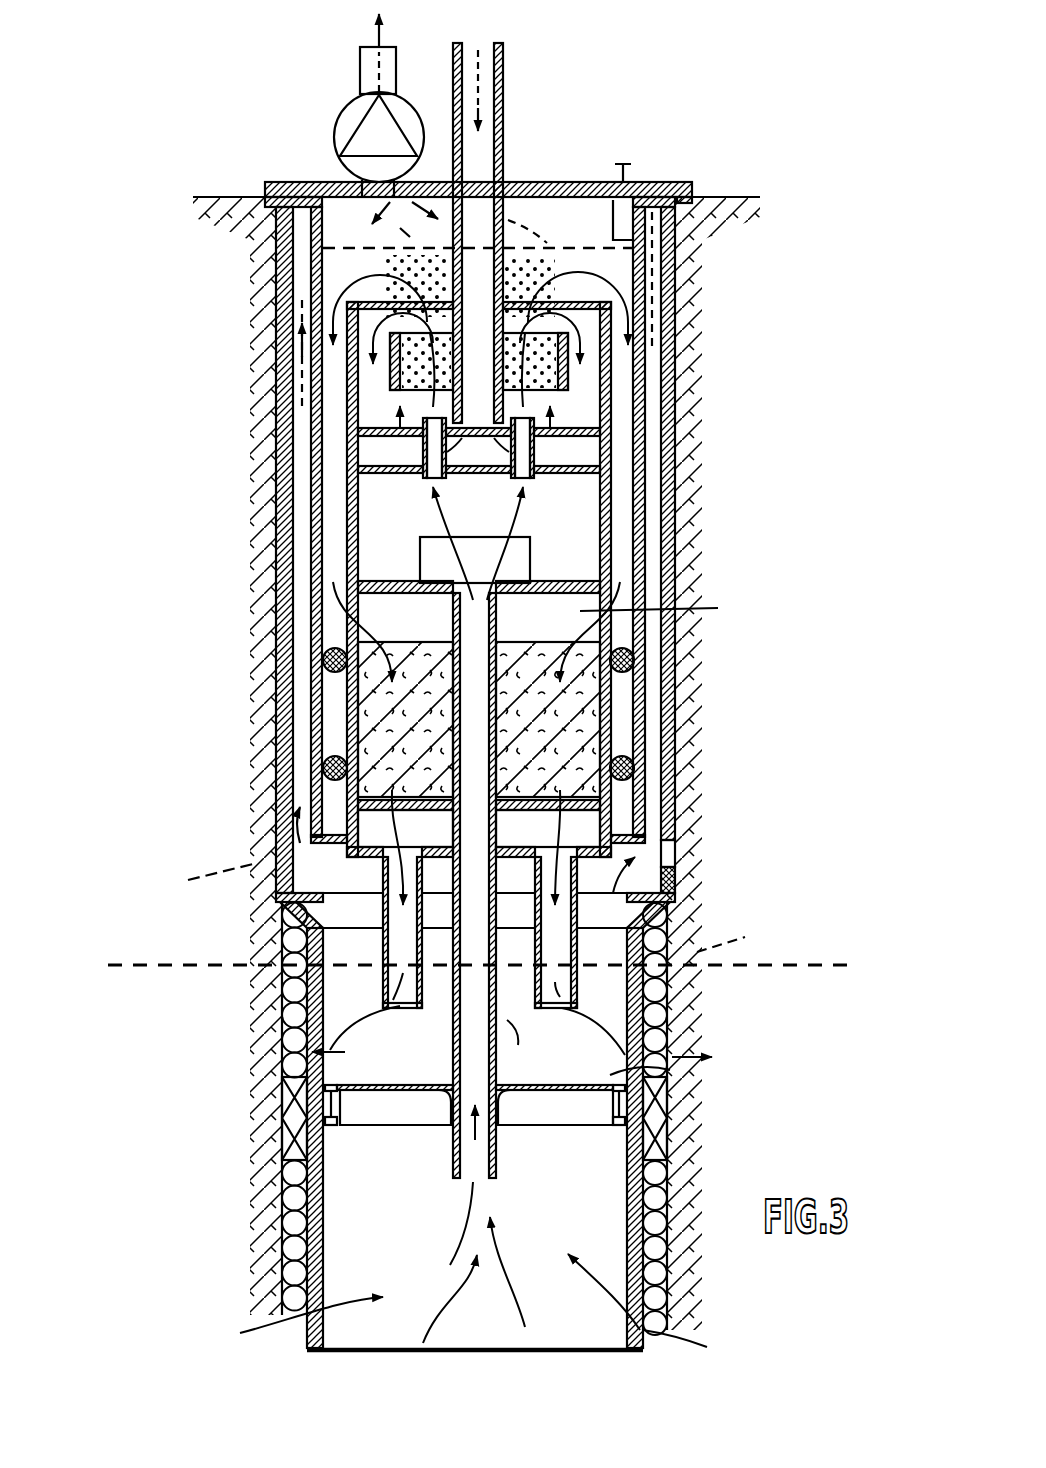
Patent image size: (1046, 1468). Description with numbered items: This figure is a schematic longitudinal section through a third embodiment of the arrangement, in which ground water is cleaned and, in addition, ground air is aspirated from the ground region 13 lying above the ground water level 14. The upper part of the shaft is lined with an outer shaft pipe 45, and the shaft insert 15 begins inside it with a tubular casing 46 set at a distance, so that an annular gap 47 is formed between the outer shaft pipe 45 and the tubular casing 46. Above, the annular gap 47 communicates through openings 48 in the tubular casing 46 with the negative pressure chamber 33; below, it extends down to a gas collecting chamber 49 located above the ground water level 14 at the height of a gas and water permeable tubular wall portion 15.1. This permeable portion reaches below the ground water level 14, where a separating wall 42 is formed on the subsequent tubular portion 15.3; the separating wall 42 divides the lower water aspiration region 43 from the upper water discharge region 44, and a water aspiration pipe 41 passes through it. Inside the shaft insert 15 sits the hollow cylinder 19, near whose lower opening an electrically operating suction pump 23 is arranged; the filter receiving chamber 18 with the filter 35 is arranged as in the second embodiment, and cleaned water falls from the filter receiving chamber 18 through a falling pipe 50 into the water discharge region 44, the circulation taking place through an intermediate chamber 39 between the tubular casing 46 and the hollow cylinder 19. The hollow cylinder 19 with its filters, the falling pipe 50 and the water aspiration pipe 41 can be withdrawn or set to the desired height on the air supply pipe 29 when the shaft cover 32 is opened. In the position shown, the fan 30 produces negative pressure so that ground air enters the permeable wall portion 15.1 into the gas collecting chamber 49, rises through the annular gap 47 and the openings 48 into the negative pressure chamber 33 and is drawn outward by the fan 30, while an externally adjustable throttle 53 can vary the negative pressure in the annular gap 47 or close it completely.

The ground region 13 is at (559, 773).
The ground water level 14 is at (797, 963).
The shaft insert 15 is at (544, 525).
The gas and water permeable tubular wall portion 15.1 is at (677, 873).
The tubular portion 15.3 is at (293, 1113).
The filter receiving chamber 18 is at (563, 717).
The hollow cylinder 19 is at (350, 508).
The suction pump 23 is at (517, 568).
The air supply pipe 29 is at (503, 80).
The fan 30 is at (333, 128).
The shaft cover 32 is at (657, 183).
The negative pressure chamber 33 is at (550, 212).
The filter 35 is at (577, 727).
The intermediate chamber 39 is at (330, 442).
The water aspiration pipe 41 is at (566, 929).
The separating wall 42 is at (370, 1098).
The water aspiration region 43 is at (402, 1265).
The water discharge region 44 is at (415, 1066).
The outer shaft pipe 45 is at (665, 488).
The tubular casing 46 is at (645, 540).
The annular gap 47 is at (652, 428).
The openings 48 is at (565, 213).
The gas collecting chamber 49 is at (280, 965).
The falling pipe 50 is at (398, 950).
The throttle 53 is at (627, 190).